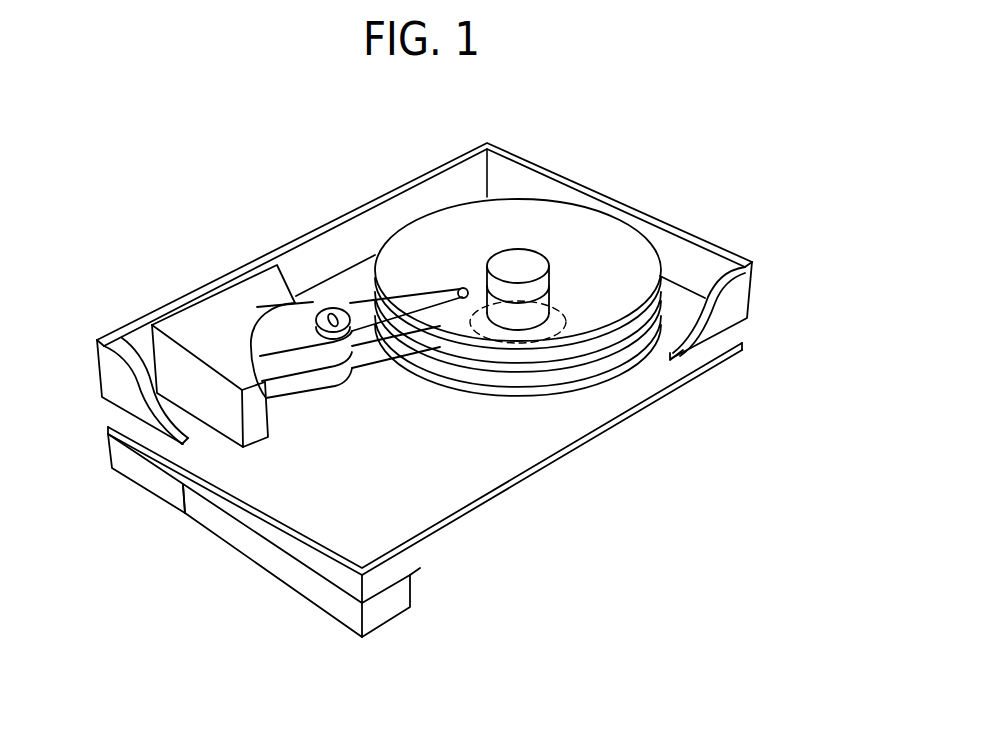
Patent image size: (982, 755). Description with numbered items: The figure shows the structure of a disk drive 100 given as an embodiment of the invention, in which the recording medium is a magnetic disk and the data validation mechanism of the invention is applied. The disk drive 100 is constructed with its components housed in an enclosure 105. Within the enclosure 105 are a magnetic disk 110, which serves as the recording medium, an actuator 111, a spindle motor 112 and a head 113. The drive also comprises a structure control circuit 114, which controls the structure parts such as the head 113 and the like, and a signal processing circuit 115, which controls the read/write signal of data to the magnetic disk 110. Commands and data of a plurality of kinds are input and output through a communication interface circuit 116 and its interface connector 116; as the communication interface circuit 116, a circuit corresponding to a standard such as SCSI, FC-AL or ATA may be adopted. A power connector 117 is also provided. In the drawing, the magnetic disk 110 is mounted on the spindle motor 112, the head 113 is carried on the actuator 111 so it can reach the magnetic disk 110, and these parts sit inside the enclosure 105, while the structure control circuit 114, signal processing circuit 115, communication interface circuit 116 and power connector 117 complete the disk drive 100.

The disk drive 100 is at (508, 133).
The enclosure 105 is at (153, 324).
The magnetic disk 110 is at (567, 228).
The actuator 111 is at (360, 310).
The spindle motor 112 is at (538, 313).
The head 113 is at (463, 291).
The structure control circuit 114 is at (620, 413).
The signal processing circuit 115 is at (264, 518).
The communication interface circuit 116 is at (263, 557).
The power connector 117 is at (142, 477).